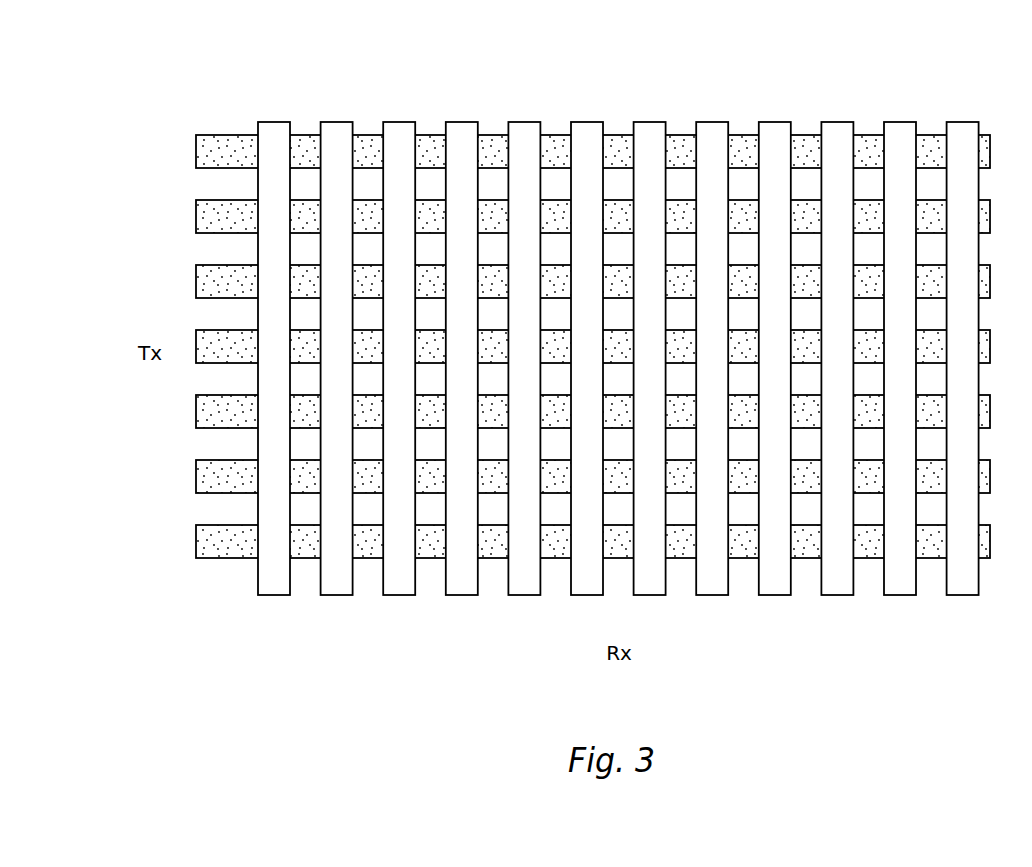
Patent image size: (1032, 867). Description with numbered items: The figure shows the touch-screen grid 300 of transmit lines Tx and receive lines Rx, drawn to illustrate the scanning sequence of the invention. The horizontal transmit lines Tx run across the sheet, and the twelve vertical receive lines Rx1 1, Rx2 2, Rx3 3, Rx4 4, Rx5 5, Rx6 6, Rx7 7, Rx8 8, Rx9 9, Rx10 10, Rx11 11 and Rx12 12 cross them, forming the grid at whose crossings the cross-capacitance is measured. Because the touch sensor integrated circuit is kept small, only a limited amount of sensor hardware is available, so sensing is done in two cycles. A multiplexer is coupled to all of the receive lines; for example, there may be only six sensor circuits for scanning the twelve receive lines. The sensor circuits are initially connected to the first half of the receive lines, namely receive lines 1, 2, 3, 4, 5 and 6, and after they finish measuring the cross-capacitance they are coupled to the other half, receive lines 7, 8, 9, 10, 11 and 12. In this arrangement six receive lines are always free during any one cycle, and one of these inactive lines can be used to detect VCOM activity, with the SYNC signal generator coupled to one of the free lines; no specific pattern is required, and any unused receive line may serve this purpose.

The sensor electrode array 300 is at (125, 85).
The receive line Rx1 1 is at (274, 375).
The receive line Rx2 2 is at (337, 375).
The receive line Rx3 3 is at (399, 375).
The receive line Rx4 4 is at (462, 375).
The receive line Rx5 5 is at (524, 375).
The receive line Rx6 6 is at (587, 375).
The receive line Rx7 7 is at (650, 375).
The receive line Rx8 8 is at (712, 375).
The receive line Rx9 9 is at (775, 375).
The receive line Rx10 10 is at (837, 375).
The receive line Rx11 11 is at (900, 375).
The receive line Rx12 12 is at (963, 375).